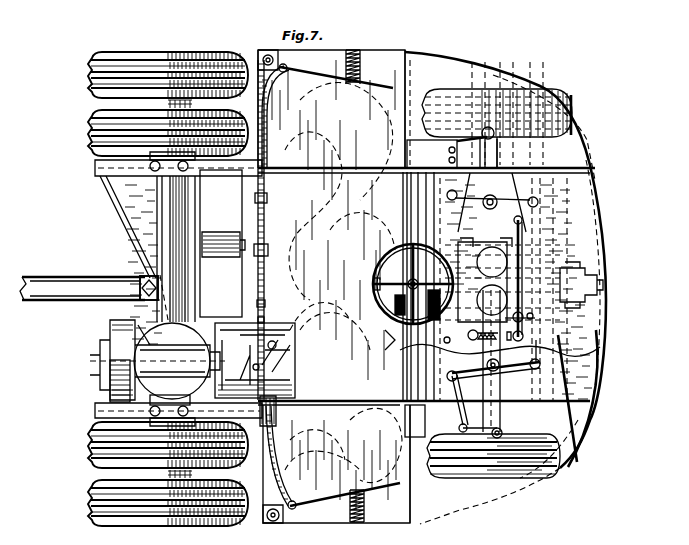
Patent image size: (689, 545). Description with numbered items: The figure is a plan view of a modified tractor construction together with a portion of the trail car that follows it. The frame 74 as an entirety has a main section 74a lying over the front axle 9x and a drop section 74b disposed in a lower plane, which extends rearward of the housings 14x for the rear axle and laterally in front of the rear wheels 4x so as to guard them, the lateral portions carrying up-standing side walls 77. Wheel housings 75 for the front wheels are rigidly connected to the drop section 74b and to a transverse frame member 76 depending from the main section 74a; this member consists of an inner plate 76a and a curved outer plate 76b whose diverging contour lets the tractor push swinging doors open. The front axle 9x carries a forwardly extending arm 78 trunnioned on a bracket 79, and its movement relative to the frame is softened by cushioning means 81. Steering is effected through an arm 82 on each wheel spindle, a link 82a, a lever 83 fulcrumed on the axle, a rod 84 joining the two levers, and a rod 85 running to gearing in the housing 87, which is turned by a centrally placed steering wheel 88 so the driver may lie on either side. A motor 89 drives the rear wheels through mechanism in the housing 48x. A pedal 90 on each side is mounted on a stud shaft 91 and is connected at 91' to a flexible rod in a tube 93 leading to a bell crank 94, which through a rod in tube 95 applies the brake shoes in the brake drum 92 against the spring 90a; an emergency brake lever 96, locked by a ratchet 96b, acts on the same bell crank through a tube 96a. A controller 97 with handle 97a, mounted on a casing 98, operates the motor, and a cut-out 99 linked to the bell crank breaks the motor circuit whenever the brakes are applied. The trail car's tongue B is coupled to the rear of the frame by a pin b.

The rear wheels 4x is at (93, 118).
The up-standing side walls 77 is at (262, 70).
The vertically disposed stud shaft 91 is at (288, 272).
The pedal connection 91' is at (300, 289).
The pedal 90 is at (328, 78).
The spring 90a is at (360, 66).
The frame 74 is at (406, 277).
The main section 74a is at (594, 170).
The drop section 74b is at (410, 515).
The wheel housings 75 is at (460, 63).
The transversely arranged frame member 76 is at (517, 260).
The inner plate 76a is at (568, 382).
The outer plate 76b is at (590, 425).
The link 82a is at (452, 152).
The cushioning means 81 is at (502, 247).
The emergency brake operating lever 96 is at (522, 246).
The forwardly extending arm 78 is at (523, 283).
The bracket 79 is at (585, 268).
The ratchet 96b is at (533, 310).
The rod 84 is at (500, 355).
The steering wheel 88 is at (445, 340).
The rod 85 is at (472, 341).
The lever 83 is at (520, 367).
The arm 82 is at (483, 437).
The front axle 9x is at (502, 415).
The controller 97 is at (210, 232).
The handle 97a is at (266, 224).
The casing 98 is at (268, 200).
The tube 93 is at (268, 250).
The bell crank 94 is at (253, 347).
The tube 95 is at (138, 325).
The brake drum 92 is at (112, 335).
The cut-out or switch 99 is at (213, 401).
The housing 48x is at (112, 372).
The housings 14x is at (162, 226).
The pin b is at (142, 280).
The tongue B is at (50, 302).
The motor 89 is at (340, 316).
The tube 96a is at (392, 300).
The housing 87 is at (385, 340).